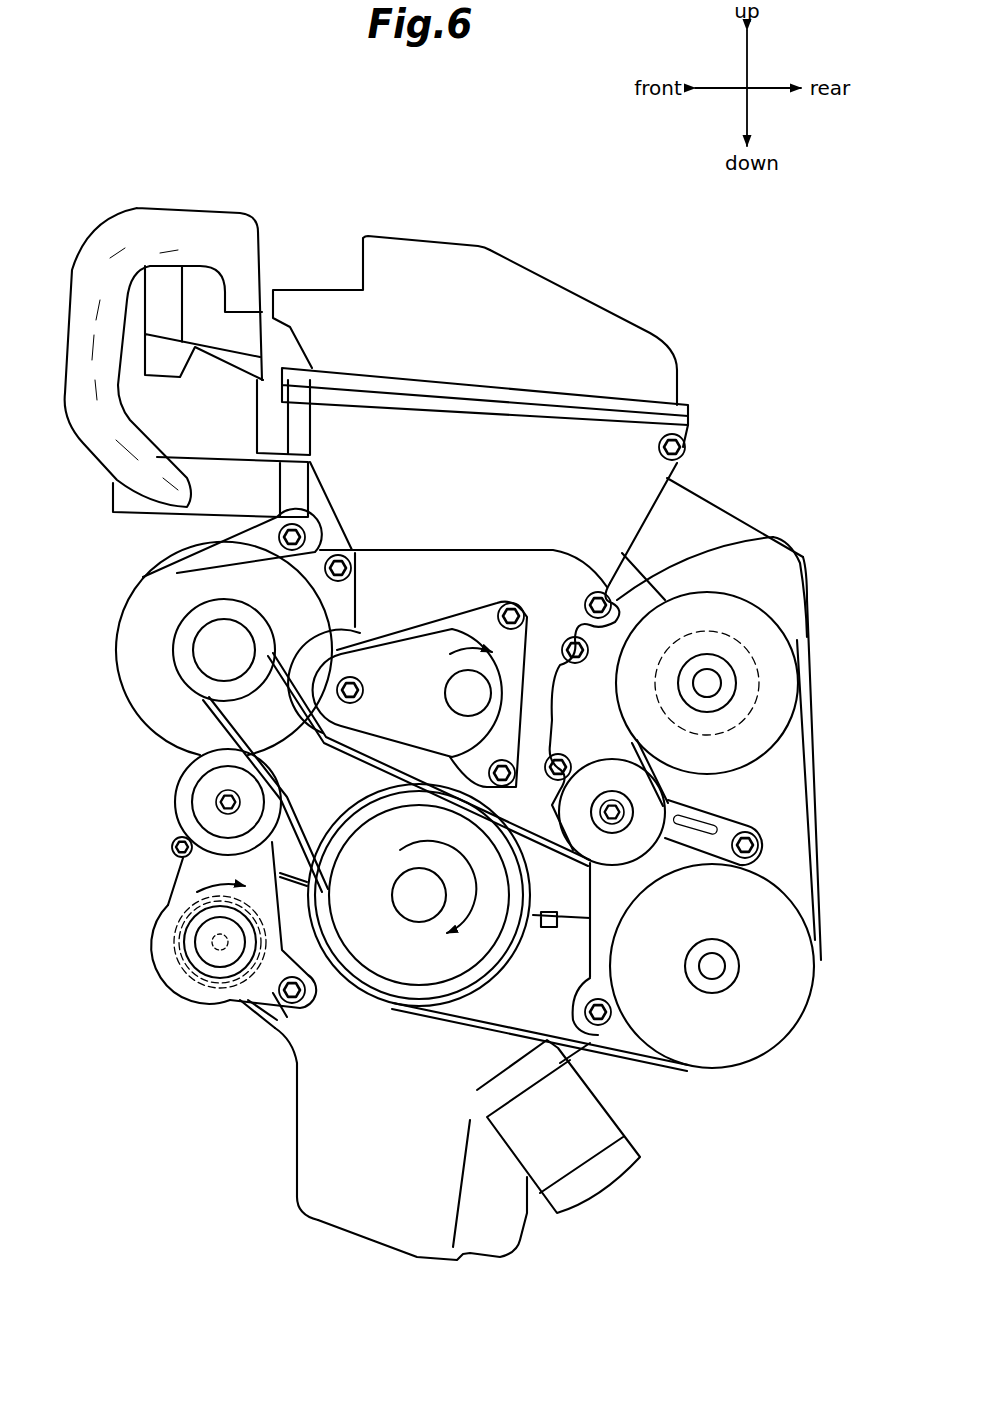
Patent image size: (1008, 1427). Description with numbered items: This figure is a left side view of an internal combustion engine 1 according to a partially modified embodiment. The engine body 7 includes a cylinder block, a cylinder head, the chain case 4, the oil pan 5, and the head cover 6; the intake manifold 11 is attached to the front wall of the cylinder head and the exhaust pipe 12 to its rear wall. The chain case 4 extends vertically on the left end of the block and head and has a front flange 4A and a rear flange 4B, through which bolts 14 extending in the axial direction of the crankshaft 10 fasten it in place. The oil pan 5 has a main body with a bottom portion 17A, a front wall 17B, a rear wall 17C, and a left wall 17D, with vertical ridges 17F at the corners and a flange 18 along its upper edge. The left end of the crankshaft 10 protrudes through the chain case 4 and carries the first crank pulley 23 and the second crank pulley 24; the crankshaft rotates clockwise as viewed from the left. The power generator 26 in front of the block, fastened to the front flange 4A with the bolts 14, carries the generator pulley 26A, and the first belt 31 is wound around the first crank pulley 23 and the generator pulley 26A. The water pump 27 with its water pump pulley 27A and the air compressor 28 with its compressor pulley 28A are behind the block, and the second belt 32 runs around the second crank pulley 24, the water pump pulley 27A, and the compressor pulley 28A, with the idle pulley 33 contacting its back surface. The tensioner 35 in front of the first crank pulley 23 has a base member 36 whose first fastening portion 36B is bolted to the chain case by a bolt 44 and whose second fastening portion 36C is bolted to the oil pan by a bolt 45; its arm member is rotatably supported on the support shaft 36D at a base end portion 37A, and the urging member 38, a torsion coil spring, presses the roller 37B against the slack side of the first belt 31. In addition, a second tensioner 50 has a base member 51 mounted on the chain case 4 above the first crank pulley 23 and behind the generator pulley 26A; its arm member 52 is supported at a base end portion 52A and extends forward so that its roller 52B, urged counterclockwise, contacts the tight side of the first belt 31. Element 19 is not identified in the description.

The internal combustion engine 1 is at (522, 158).
The chain case 4 is at (616, 518).
The front flange 4A is at (150, 578).
The rear flange 4B is at (748, 539).
The oil pan 5 is at (290, 1188).
The head cover 6 is at (518, 290).
The engine body 7 is at (650, 326).
The crankshaft 10 is at (403, 900).
The intake manifold 11 is at (185, 205).
The exhaust pipe 12 is at (790, 574).
The bolt 14 is at (687, 447).
The bottom portion 17A is at (382, 1253).
The front wall 17B is at (295, 1100).
The rear wall 17C is at (527, 1223).
The left wall 17D is at (350, 1188).
The ridge 17F is at (285, 1023).
The flange 18 is at (577, 920).
The sensor 19 is at (548, 928).
The first crank pulley 23 is at (388, 985).
The second crank pulley 24 is at (456, 999).
The power generator 26 is at (130, 628).
The generator pulley 26A is at (190, 666).
The water pump 27 is at (760, 690).
The water pump pulley 27A is at (773, 690).
The air compressor 28 is at (760, 866).
The compressor pulley 28A is at (790, 1010).
The first belt 31 is at (180, 698).
The second belt 32 is at (808, 798).
The idle pulley 33 is at (655, 801).
The tensioner 35 is at (149, 958).
The base member 36 is at (164, 874).
The first fastening portion 36B is at (177, 860).
The second fastening portion 36C is at (250, 1008).
The support shaft 36D is at (213, 940).
The base end portion 37A is at (183, 979).
The roller 37B is at (187, 784).
The urging member 38 is at (187, 910).
The bolt 44 is at (178, 838).
The bolt 45 is at (272, 1012).
The second tensioner 50 is at (444, 630).
The base member 51 is at (495, 605).
The arm member 52 is at (415, 655).
The base end portion 52A is at (523, 690).
The roller 52B is at (363, 640).